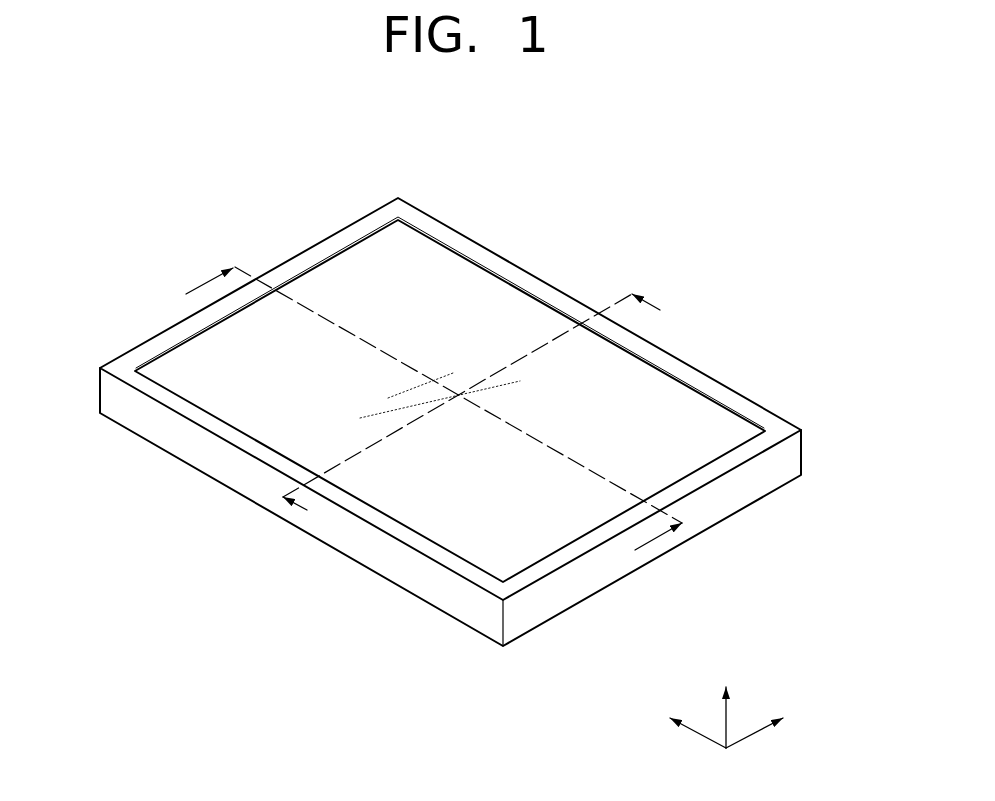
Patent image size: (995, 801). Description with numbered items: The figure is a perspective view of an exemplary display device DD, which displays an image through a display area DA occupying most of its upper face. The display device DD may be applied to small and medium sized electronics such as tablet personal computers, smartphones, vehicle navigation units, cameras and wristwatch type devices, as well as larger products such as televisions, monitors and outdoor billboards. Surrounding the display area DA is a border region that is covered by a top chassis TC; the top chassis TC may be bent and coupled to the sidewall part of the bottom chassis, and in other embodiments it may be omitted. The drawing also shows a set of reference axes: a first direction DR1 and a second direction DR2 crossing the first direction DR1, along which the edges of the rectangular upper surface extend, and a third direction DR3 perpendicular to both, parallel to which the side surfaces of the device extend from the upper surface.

The display device DD is at (676, 258).
The display area DA is at (518, 320).
The top chassis TC is at (760, 415).
The first direction DR1 is at (777, 727).
The second direction DR2 is at (675, 727).
The third direction DR3 is at (726, 704).